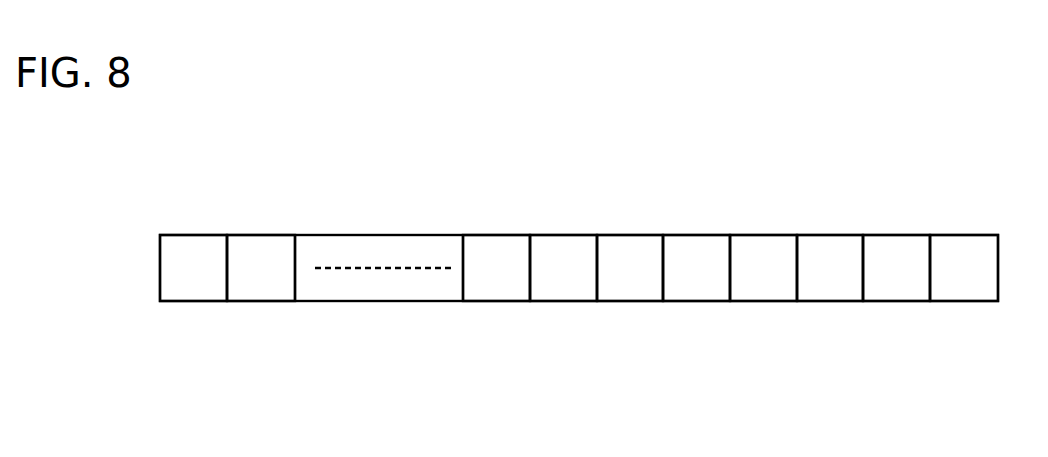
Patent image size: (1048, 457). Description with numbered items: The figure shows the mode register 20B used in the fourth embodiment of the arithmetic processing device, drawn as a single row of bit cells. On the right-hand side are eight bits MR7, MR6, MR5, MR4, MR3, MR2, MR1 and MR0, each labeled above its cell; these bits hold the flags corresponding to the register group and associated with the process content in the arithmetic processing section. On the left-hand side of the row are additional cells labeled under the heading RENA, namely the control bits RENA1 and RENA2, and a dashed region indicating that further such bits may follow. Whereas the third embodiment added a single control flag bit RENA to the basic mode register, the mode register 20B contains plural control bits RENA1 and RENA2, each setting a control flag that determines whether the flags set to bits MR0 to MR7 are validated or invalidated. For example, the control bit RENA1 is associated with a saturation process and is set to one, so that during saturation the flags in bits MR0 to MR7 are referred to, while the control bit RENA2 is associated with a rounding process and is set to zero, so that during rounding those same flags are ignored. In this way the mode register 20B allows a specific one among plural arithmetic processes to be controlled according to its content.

The mode register 20B is at (797, 125).
The control flag bit RENA is at (188, 11).
The control bit RENA1 is at (190, 303).
The control bit RENA2 is at (262, 303).
The mode register bit MR7 is at (503, 232).
The mode register bit MR6 is at (575, 232).
The mode register bit MR5 is at (642, 232).
The mode register bit MR4 is at (703, 232).
The mode register bit MR3 is at (772, 232).
The mode register bit MR2 is at (830, 232).
The mode register bit MR1 is at (905, 232).
The mode register bit MR0 is at (963, 232).